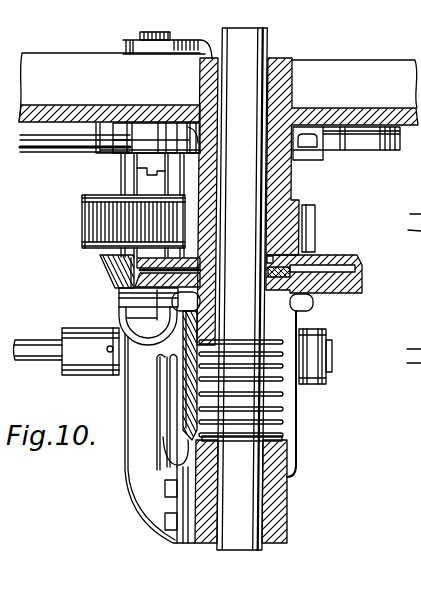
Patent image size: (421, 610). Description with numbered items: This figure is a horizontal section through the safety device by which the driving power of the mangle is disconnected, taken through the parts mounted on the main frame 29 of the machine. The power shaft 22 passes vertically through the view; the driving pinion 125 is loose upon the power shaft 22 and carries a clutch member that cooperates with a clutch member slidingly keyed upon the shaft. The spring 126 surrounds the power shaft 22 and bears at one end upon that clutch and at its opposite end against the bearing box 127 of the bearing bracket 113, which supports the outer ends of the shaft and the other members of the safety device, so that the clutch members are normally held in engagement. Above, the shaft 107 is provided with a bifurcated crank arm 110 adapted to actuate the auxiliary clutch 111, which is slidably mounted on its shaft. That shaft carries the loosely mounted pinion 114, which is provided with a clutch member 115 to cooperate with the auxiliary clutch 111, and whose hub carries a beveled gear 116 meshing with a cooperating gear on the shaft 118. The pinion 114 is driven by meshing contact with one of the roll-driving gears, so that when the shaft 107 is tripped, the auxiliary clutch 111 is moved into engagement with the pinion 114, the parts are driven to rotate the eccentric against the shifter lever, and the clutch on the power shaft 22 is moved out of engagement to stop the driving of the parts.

The power shaft 22 is at (270, 44).
The main frame 29 is at (354, 84).
The shaft 107 is at (47, 137).
The bifurcated crank arm 110 is at (120, 128).
The auxiliary clutch 111 is at (137, 157).
The bearing bracket 113 is at (137, 470).
The pinion 114 is at (82, 220).
The clutch member 115 is at (121, 192).
The beveled gear 116 is at (100, 259).
The shaft 118 is at (0, 318).
The driving pinion 125 is at (316, 214).
The spring 126 is at (268, 407).
The bearing box 127 is at (273, 493).